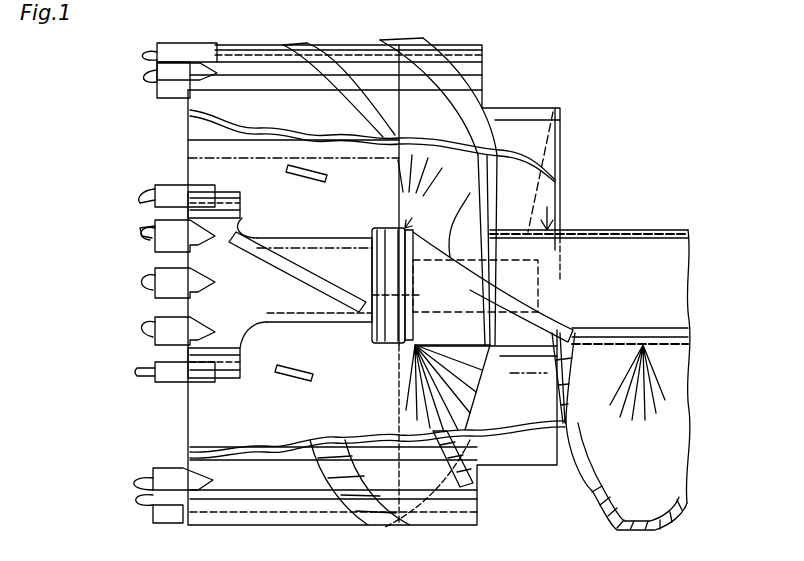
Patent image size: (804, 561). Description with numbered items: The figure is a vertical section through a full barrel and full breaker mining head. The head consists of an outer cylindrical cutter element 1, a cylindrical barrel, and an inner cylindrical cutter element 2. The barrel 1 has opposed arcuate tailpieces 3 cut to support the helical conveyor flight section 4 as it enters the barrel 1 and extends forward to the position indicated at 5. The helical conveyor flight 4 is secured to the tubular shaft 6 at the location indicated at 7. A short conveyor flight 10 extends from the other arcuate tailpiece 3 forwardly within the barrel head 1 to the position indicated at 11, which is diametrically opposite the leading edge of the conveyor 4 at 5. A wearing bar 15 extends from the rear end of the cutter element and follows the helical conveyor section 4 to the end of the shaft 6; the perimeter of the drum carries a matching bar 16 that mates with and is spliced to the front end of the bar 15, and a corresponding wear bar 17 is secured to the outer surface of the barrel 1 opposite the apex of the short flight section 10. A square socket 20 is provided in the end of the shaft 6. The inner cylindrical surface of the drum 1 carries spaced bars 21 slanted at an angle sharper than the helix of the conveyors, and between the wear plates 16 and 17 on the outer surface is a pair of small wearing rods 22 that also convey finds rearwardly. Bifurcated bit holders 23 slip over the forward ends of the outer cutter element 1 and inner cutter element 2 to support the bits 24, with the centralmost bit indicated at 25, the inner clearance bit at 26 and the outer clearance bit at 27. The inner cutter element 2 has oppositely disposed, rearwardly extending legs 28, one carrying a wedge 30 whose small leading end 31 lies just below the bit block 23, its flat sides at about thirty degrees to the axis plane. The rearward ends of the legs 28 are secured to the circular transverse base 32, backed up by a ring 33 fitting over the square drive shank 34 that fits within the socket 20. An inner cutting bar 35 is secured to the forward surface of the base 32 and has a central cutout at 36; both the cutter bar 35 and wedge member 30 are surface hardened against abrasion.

The outer cylindrical cutter element 1 is at (340, 46).
The inner cylindrical cutter element 2 is at (234, 194).
The arcuate tailpieces 3 is at (527, 108).
The helical conveyor flight section 4 is at (647, 444).
The leading edge position of conveyor flight 5 is at (390, 187).
The tubular shaft 6 is at (665, 290).
The securing point of flight to shaft 7 is at (560, 305).
The short conveyor flight 10 is at (555, 180).
The forward end position of short flight 11 is at (400, 360).
The wearing bar 15 is at (620, 522).
The matching bar 16 is at (456, 96).
The wear bar 17 is at (316, 434).
The square socket 20 is at (490, 278).
The spaced bars 21 is at (312, 183).
The small wearing rods 22 is at (288, 45).
The bit holders 23 is at (177, 72).
The bits 24 is at (146, 63).
The centralmost bit 25 is at (140, 375).
The inner clearance bit 26 is at (148, 190).
The outer clearance bit 27 is at (142, 233).
The legs 28 is at (314, 238).
The wedge 30 is at (308, 284).
The small leading end of wedge 31 is at (243, 224).
The transverse base 32 is at (380, 217).
The ring 33 is at (400, 220).
The drive shank 34 is at (470, 186).
The inner cutting bar 35 is at (416, 295).
The cutout 36 is at (310, 325).